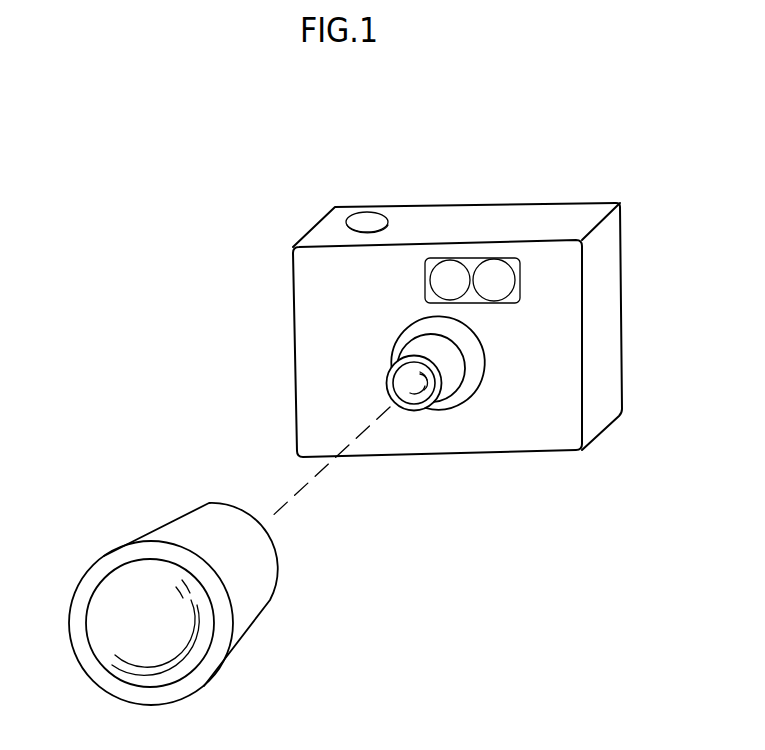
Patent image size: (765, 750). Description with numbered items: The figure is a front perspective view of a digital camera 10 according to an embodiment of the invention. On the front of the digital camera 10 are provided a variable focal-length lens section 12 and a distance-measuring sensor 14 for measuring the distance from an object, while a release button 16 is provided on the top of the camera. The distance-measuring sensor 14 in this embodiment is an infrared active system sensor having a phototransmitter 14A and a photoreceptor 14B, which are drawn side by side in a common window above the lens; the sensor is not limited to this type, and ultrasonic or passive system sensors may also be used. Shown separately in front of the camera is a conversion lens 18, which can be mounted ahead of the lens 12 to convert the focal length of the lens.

The digital camera 10 is at (575, 197).
The variable focal-length lens section 12 is at (375, 362).
The distance-measuring sensor 14 is at (502, 318).
The phototransmitter 14A is at (450, 280).
The photoreceptor 14B is at (509, 217).
The release button 16 is at (367, 220).
The conversion lens 18 is at (118, 600).